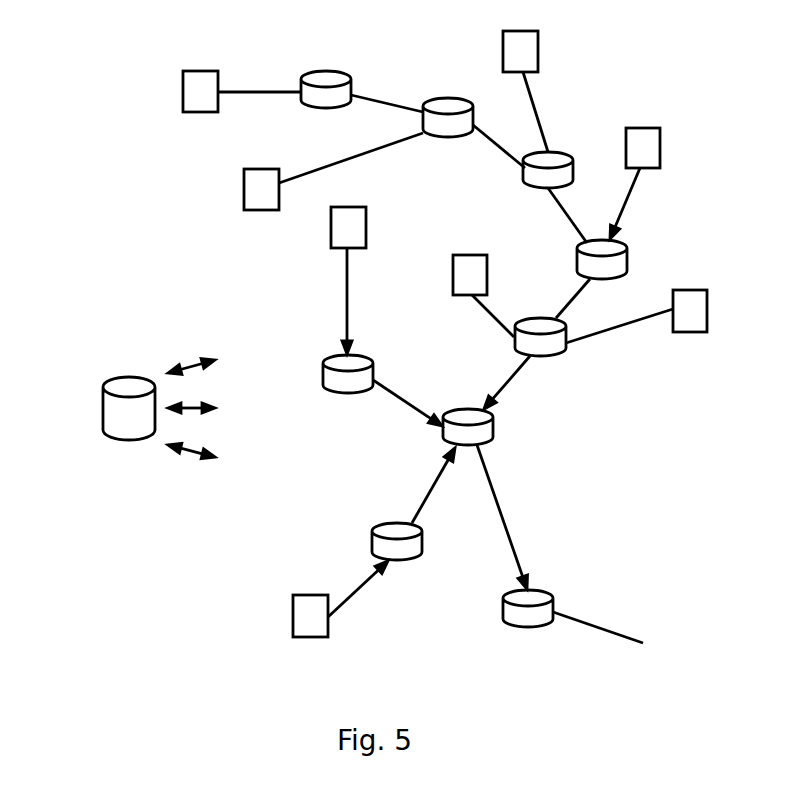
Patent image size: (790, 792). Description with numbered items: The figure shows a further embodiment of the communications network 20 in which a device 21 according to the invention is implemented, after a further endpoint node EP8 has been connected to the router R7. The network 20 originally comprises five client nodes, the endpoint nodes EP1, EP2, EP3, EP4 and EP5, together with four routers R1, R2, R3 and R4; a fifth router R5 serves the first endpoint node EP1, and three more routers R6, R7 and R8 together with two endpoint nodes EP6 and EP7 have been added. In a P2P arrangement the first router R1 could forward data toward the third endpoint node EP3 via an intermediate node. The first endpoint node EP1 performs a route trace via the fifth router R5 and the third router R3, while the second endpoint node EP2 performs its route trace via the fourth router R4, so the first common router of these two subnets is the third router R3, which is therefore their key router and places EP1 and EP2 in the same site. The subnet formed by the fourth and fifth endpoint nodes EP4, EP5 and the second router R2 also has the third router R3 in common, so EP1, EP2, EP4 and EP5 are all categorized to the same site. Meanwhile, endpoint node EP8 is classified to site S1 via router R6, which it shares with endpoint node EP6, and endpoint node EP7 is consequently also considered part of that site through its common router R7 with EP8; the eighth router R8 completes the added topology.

The communications network 20 is at (140, 231).
The device 21 is at (103, 412).
The first endpoint node EP1 is at (299, 601).
The second endpoint node EP2 is at (354, 214).
The third endpoint node EP3 is at (651, 134).
The fourth endpoint node EP4 is at (694, 297).
The fifth endpoint node EP5 is at (478, 260).
The sixth endpoint node EP6 is at (529, 39).
The seventh endpoint node EP7 is at (208, 78).
The eighth endpoint node EP8 is at (270, 175).
The first router R1 is at (616, 254).
The second router R2 is at (555, 346).
The third router R3 is at (485, 428).
The fourth router R4 is at (332, 385).
The fifth router R5 is at (378, 539).
The sixth router R6 is at (562, 178).
The seventh router R7 is at (462, 117).
The eighth router R8 is at (340, 89).